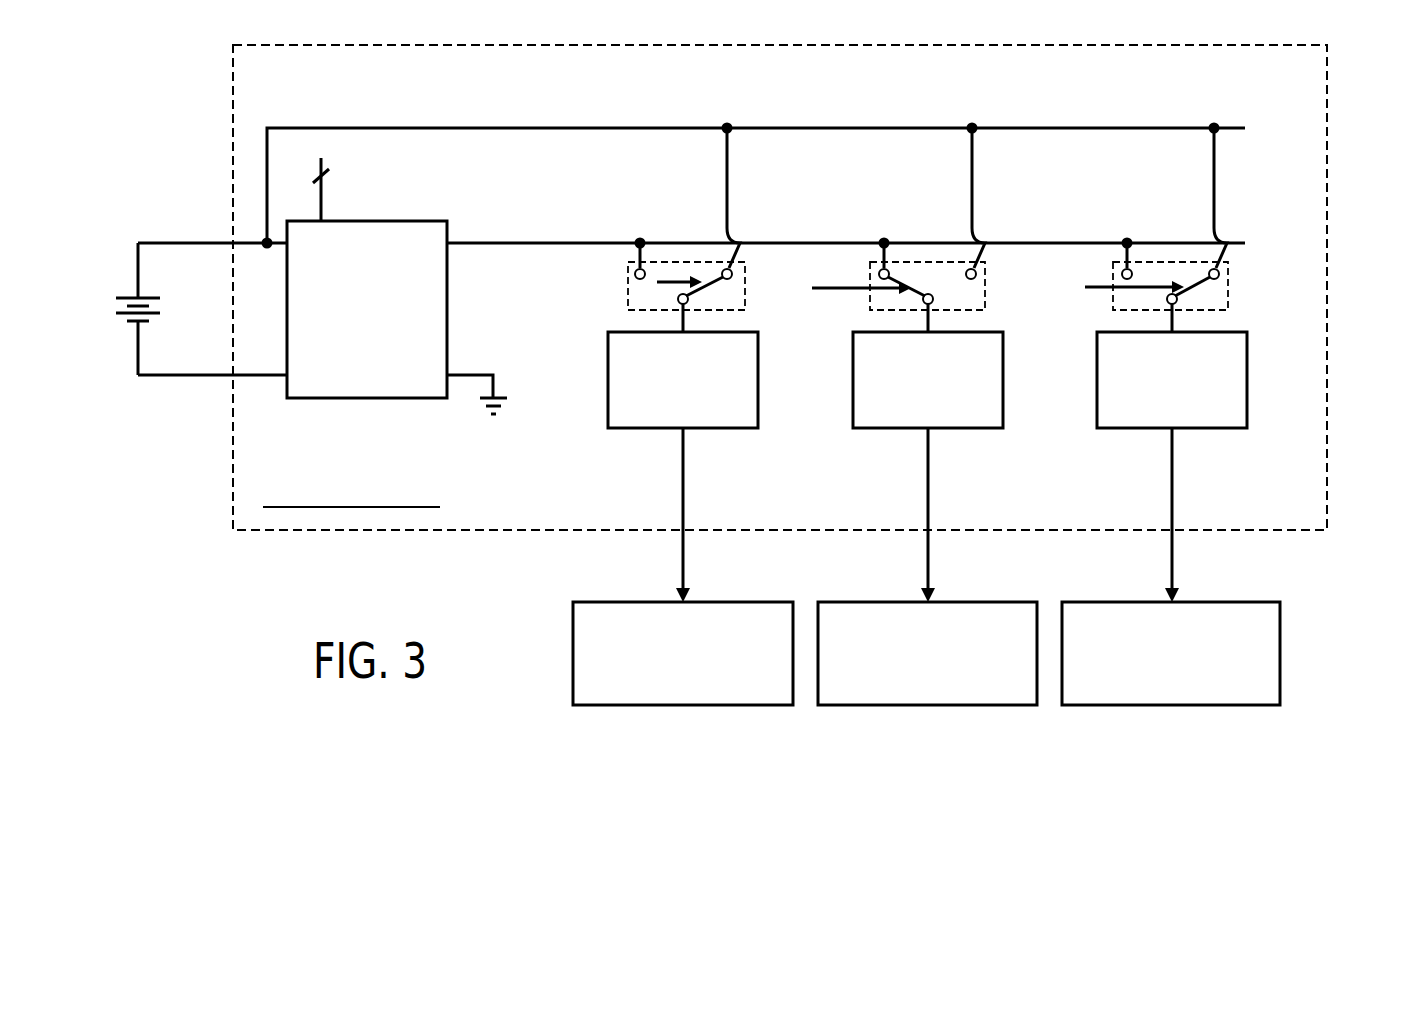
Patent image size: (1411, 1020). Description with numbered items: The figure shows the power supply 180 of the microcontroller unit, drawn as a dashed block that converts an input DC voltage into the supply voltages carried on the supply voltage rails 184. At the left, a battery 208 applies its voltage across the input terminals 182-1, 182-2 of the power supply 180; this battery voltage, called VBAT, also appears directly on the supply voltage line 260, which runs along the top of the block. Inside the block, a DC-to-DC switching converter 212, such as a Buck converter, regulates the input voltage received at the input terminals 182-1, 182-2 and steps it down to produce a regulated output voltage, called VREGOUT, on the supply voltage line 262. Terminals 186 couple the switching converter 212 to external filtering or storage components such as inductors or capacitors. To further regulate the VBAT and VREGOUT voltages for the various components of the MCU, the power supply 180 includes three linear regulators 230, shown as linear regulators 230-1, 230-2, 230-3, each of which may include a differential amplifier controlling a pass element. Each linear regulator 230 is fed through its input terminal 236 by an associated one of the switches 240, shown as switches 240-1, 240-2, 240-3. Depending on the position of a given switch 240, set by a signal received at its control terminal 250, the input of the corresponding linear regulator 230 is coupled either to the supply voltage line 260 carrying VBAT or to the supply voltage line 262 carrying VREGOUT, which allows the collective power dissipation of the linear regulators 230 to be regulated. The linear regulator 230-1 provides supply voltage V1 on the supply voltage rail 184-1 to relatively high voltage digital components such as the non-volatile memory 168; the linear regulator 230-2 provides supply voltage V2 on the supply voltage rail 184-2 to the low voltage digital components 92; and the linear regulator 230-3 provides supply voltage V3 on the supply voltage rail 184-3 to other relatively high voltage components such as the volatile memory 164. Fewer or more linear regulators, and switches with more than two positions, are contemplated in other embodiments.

The power supply 180 is at (1294, 556).
The battery 208 is at (125, 293).
The input terminal 182-1 is at (196, 240).
The input terminal 182-2 is at (196, 378).
The DC-to-DC switching converter 212 is at (367, 220).
The terminals 186 is at (323, 197).
The supply voltage line 260 is at (533, 127).
The supply voltage line 262 is at (638, 238).
The switches 240 is at (961, 248).
The switch 240-1 is at (735, 260).
The switch 240-2 is at (990, 258).
The switch 240-3 is at (1235, 258).
The control terminal 250 is at (673, 278).
The input terminal 236 is at (681, 325).
The linear regulators 230 is at (881, 392).
The linear regulator 230-1 is at (607, 400).
The linear regulator 230-2 is at (852, 400).
The linear regulator 230-3 is at (1096, 400).
The supply voltage rails 184 is at (874, 515).
The supply voltage rail 184-1 is at (681, 515).
The supply voltage rail 184-2 is at (926, 515).
The supply voltage rail 184-3 is at (1118, 515).
The non-volatile memory 168 is at (683, 706).
The low voltage digital components 92 is at (928, 706).
The volatile memory 164 is at (1172, 706).